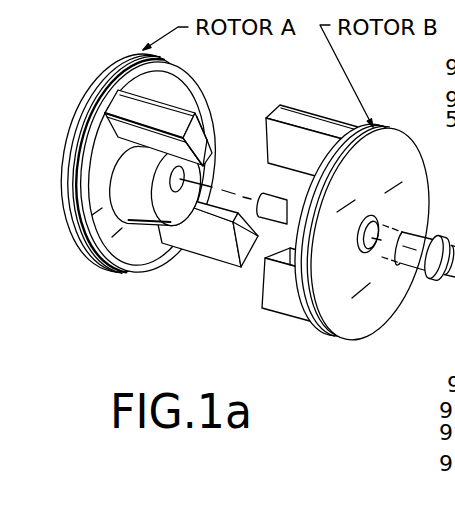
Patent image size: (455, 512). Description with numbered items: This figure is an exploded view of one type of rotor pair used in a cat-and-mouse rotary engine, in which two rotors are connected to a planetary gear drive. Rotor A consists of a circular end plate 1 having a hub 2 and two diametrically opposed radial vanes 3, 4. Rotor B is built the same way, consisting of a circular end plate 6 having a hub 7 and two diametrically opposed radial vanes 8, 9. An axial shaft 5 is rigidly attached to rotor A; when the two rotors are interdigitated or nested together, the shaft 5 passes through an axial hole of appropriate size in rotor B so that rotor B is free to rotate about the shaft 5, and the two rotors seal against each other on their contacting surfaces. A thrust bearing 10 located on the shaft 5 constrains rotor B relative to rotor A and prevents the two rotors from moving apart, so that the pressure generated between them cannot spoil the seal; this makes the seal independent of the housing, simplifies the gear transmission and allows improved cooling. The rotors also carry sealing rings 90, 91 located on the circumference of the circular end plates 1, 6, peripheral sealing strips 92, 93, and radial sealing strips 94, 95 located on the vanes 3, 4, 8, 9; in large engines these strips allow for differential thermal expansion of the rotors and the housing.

The circular end plate 1 is at (132, 160).
The hub 2 is at (128, 231).
The radial vane 3 is at (194, 257).
The radial vane 4 is at (148, 161).
The axial shaft 5 is at (393, 299).
The circular end plate 6 is at (362, 247).
The hub 7 is at (234, 257).
The radial vane 8 is at (276, 308).
The radial vane 9 is at (312, 124).
The thrust bearing 10 is at (416, 318).
The sealing ring 90 is at (131, 158).
The sealing ring 91 is at (116, 101).
The peripheral sealing strip 92 is at (115, 131).
The peripheral sealing strip 93 is at (105, 133).
The radial sealing strip 94 is at (219, 114).
The radial sealing strip 95 is at (223, 126).